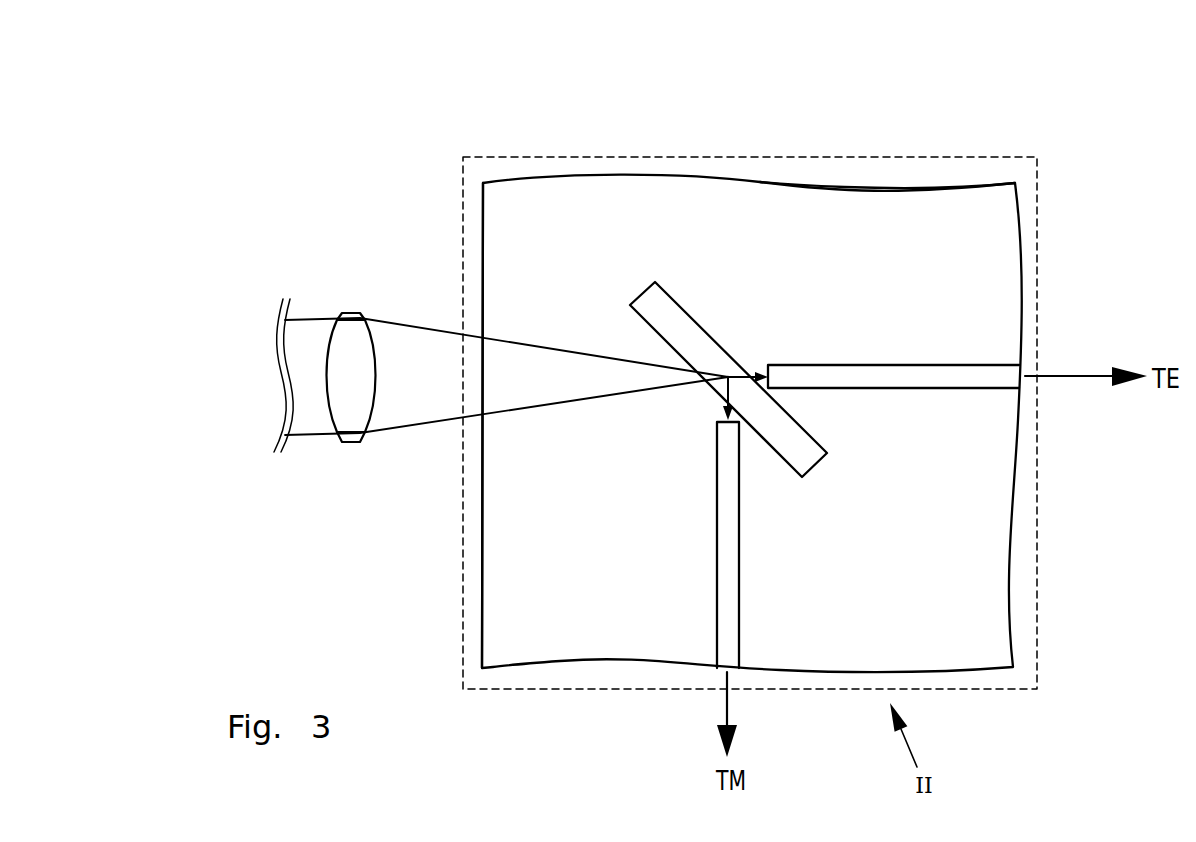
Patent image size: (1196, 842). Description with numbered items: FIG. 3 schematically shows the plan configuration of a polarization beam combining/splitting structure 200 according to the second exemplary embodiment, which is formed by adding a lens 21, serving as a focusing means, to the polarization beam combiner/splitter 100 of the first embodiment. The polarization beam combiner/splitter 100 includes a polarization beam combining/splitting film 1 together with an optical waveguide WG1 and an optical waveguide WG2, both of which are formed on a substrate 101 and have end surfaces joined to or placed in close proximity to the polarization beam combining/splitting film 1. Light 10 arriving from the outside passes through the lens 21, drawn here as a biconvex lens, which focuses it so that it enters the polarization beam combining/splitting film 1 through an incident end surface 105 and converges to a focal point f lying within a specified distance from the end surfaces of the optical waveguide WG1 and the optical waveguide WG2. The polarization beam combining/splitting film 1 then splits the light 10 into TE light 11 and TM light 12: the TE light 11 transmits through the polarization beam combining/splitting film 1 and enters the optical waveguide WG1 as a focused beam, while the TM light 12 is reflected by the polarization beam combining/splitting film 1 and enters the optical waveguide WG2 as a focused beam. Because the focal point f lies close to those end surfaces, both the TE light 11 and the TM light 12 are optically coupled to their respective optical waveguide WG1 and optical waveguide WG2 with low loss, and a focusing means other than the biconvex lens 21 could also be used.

The polarization beam combining/splitting structure 200 is at (758, 62).
The polarization beam combiner/splitter 100 is at (962, 157).
The substrate 101 is at (835, 217).
The incident end surface 105 is at (483, 212).
The polarization beam combining/splitting film 1 is at (662, 298).
The lens 21 is at (352, 312).
The light 10 is at (383, 434).
The focal point f is at (733, 373).
The TE light 11 is at (753, 380).
The TM light 12 is at (722, 405).
The optical waveguide WG1 is at (992, 377).
The optical waveguide WG2 is at (739, 643).